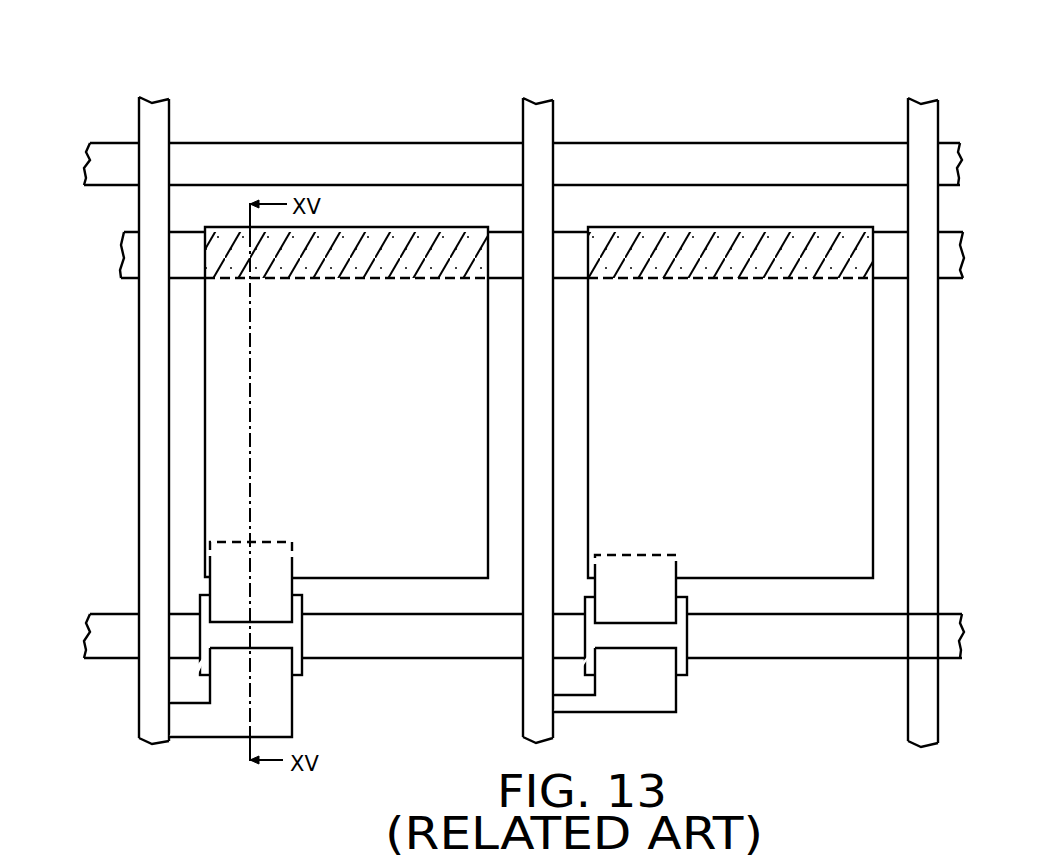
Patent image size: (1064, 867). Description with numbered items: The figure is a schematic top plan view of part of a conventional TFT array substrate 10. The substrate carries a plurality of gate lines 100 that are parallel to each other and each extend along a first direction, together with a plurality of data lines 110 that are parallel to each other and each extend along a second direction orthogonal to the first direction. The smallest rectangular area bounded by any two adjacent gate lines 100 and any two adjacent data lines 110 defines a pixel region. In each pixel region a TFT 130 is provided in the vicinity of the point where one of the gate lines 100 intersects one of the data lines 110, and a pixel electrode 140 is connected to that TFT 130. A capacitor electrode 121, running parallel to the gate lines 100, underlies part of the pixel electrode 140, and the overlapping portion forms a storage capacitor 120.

The TFT array substrate 10 is at (523, 65).
The gate lines 100 is at (947, 167).
The data lines 110 is at (538, 123).
The storage capacitor 120 is at (848, 247).
The capacitor electrode 121 is at (952, 263).
The TFT 130 is at (668, 637).
The pixel electrode 140 is at (845, 405).